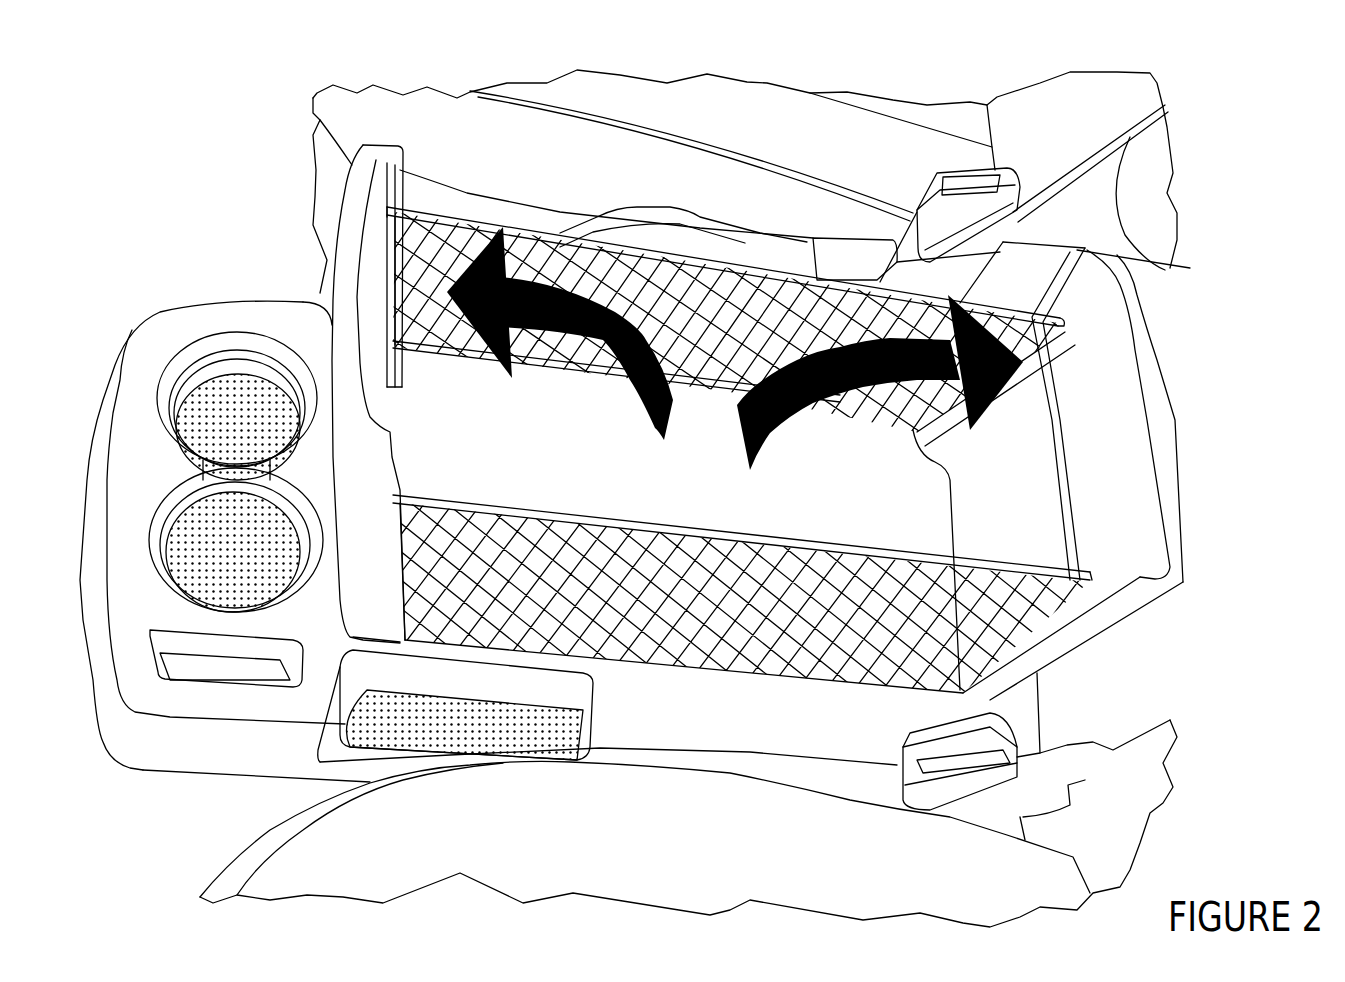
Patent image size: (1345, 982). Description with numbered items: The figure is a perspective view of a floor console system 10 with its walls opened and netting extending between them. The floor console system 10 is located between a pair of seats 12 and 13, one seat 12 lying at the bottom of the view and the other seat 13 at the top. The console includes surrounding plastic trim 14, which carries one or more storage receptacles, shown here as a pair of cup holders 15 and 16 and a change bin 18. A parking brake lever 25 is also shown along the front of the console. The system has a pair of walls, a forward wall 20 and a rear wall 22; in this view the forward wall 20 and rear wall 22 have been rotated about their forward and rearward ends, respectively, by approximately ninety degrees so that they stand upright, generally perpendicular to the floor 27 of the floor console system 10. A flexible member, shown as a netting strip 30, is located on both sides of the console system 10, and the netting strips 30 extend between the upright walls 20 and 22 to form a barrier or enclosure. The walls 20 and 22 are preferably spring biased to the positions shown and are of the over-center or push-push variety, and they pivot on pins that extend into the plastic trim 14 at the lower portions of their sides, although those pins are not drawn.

The floor console system 10 is at (631, 504).
The seat 12 is at (503, 836).
The seat 13 is at (838, 171).
The plastic trim 14 is at (212, 535).
The cup holder 15 is at (288, 350).
The cup holder 16 is at (158, 567).
The change bin 18 is at (280, 637).
The forward wall 20 is at (350, 516).
The rear wall 22 is at (1097, 445).
The parking brake lever 25 is at (707, 731).
The floor 27 is at (980, 497).
The netting strip 30 is at (462, 217).